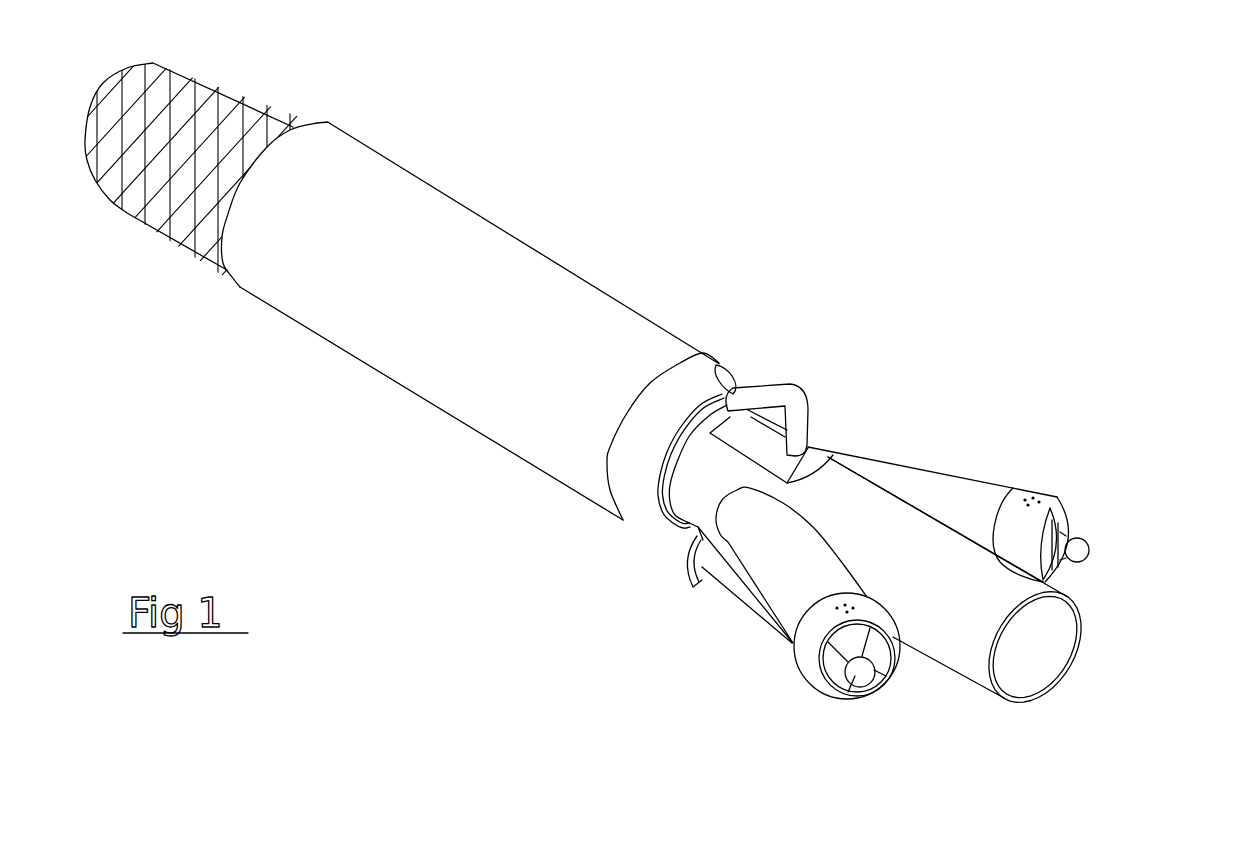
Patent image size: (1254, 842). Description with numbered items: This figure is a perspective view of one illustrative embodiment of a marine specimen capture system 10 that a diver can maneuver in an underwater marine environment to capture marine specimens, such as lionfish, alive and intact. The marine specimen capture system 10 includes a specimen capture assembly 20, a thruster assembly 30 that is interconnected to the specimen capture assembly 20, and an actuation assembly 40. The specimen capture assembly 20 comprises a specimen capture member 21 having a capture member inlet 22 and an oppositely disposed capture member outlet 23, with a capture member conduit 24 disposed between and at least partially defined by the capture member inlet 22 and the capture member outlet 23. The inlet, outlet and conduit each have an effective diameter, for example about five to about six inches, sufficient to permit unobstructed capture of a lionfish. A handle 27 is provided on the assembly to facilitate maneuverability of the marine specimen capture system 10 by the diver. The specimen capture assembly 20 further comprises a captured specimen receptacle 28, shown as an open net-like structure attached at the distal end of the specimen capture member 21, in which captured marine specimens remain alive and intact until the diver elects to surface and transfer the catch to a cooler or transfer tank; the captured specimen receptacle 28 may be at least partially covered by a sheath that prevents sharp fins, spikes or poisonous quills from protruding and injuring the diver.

The marine specimen capture system 10 is at (940, 233).
The specimen capture assembly 20 is at (988, 715).
The specimen capture member 21 is at (843, 593).
The capture member inlet 22 is at (1082, 628).
The capture member outlet 23 is at (714, 362).
The capture member conduit 24 is at (1035, 646).
The handle 27 is at (813, 407).
The captured specimen receptacle 28 is at (178, 237).
The thruster assembly 30 is at (1085, 485).
The actuation assembly 40 is at (668, 577).